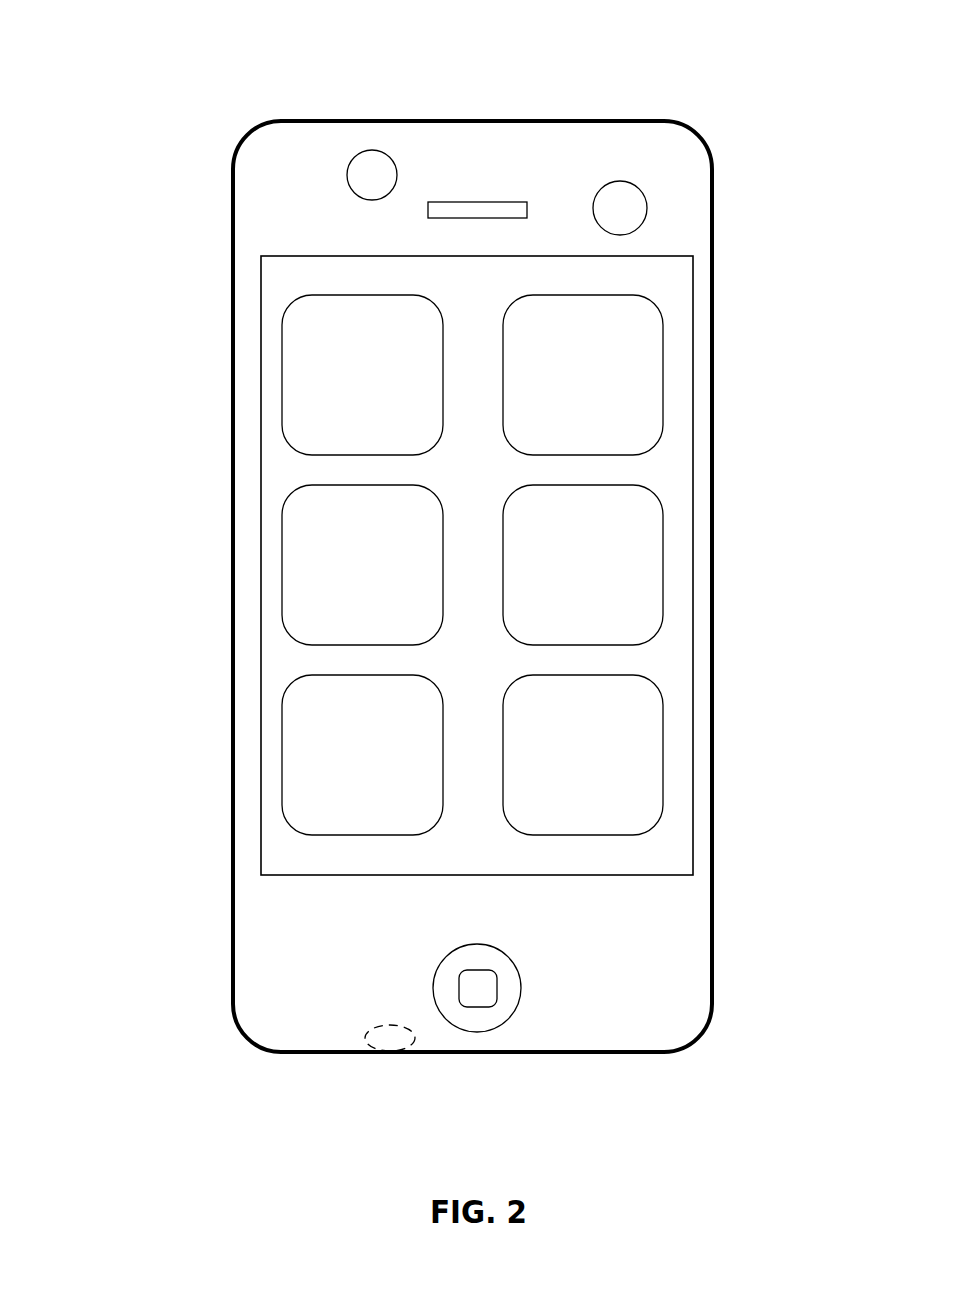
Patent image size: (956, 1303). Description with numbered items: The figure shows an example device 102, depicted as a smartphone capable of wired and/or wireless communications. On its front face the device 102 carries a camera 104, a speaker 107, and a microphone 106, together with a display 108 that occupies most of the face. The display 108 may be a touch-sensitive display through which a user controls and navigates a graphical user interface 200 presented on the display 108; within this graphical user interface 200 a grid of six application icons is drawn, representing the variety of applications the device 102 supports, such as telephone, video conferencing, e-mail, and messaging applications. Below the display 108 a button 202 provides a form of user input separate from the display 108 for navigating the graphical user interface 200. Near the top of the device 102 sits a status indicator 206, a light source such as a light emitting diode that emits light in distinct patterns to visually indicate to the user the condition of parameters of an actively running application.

The device 102 is at (168, 81).
The camera 104 is at (372, 166).
The microphone 106 is at (387, 1053).
The speaker 107 is at (461, 210).
The display 108 is at (262, 472).
The graphical user interface 200 is at (680, 845).
The button 202 is at (513, 997).
The status indicator 206 is at (626, 182).